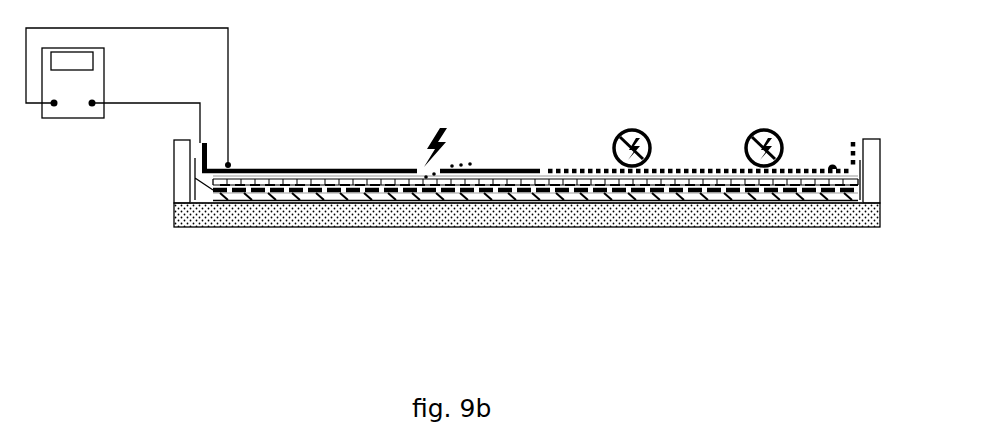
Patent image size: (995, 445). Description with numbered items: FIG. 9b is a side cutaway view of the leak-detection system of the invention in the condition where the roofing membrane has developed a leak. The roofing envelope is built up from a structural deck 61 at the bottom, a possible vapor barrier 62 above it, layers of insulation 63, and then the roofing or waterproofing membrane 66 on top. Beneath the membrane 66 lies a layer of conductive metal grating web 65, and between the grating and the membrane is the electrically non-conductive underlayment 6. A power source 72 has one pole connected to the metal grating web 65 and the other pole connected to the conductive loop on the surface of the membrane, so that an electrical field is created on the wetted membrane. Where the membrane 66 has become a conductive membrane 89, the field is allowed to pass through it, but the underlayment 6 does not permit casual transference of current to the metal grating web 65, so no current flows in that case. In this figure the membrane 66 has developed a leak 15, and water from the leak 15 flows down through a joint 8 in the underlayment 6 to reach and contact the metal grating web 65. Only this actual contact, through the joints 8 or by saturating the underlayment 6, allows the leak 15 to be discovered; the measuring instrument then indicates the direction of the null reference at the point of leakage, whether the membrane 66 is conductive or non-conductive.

The power source 72 is at (108, 69).
The membrane 66 is at (284, 168).
The leak 15 is at (444, 164).
The conductive membrane 89 is at (699, 168).
The structural deck 61 is at (234, 224).
The vapor barrier 62 is at (290, 203).
The layers of insulation 63 is at (372, 182).
The joint 8 is at (380, 191).
The metal grating web 65 is at (410, 190).
The underlayment 6 is at (482, 184).